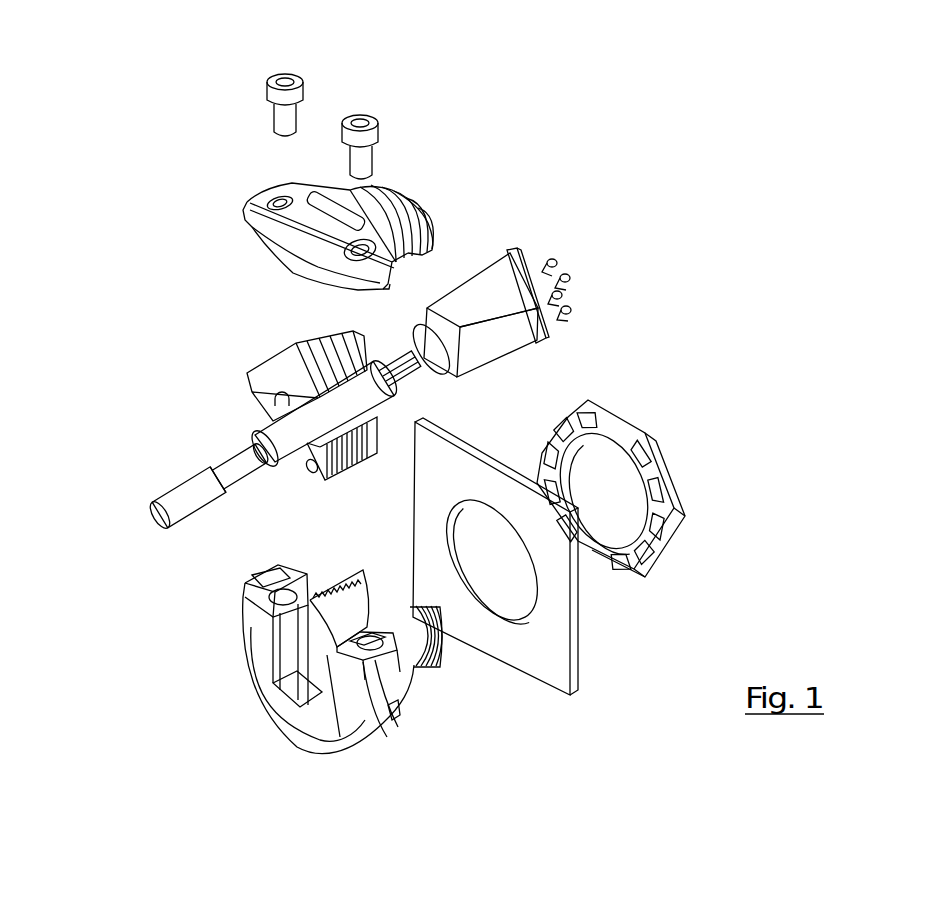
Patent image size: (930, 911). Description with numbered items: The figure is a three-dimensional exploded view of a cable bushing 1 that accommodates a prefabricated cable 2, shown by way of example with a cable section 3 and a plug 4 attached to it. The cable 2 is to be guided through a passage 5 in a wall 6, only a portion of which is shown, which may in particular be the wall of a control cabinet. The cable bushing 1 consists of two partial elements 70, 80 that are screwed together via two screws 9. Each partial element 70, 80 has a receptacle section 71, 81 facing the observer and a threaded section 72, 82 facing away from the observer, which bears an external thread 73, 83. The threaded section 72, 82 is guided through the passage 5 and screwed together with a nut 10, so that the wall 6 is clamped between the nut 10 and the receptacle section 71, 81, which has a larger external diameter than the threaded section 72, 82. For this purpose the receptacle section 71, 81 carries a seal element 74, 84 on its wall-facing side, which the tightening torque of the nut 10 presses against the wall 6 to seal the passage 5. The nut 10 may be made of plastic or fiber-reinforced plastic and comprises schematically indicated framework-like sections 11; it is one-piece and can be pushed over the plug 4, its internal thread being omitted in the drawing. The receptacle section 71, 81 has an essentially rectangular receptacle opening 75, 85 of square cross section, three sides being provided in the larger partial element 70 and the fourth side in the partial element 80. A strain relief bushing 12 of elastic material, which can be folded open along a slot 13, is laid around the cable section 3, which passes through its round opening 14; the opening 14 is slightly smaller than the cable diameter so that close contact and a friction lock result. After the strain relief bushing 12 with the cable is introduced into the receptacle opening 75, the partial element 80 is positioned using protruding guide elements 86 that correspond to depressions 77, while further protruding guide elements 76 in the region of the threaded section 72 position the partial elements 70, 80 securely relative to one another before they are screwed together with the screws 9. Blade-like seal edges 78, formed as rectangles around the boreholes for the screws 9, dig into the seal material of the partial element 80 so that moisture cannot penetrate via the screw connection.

The cable bushing 1 is at (170, 188).
The prefabricated cable 2 is at (170, 487).
The cable section 3 is at (283, 428).
The plug 4 is at (513, 285).
The passage 5 is at (525, 578).
The wall 6 is at (548, 658).
The screws 9 is at (355, 122).
The nut 10 is at (662, 449).
The framework-like sections 11 is at (658, 525).
The strain relief bushing 12 is at (276, 360).
The slot 13 is at (348, 423).
The round opening 14 is at (283, 403).
The partial element 70 is at (243, 656).
The receptacle section 71 is at (322, 740).
The threaded section 72 is at (432, 655).
The external thread 73 is at (429, 636).
The seal element 74 is at (414, 690).
The receptacle opening 75 is at (295, 680).
The protruding guide elements 76 is at (420, 607).
The depressions 77 is at (265, 580).
The seal edges 78 is at (272, 600).
The partial element 80 is at (256, 238).
The receptacle section 81 is at (308, 210).
The threaded section 82 is at (405, 222).
The external thread 83 is at (396, 223).
The seal element 84 is at (380, 228).
The receptacle opening 85 is at (300, 270).
The protruding guide elements 86 is at (363, 283).